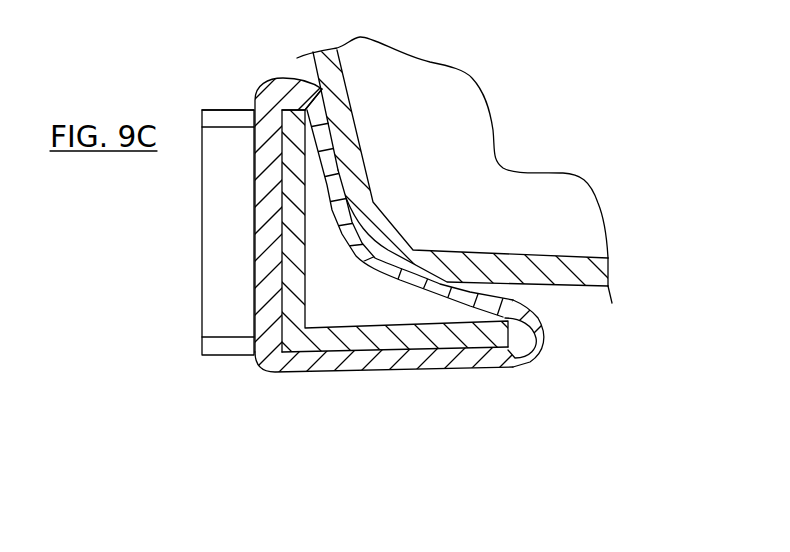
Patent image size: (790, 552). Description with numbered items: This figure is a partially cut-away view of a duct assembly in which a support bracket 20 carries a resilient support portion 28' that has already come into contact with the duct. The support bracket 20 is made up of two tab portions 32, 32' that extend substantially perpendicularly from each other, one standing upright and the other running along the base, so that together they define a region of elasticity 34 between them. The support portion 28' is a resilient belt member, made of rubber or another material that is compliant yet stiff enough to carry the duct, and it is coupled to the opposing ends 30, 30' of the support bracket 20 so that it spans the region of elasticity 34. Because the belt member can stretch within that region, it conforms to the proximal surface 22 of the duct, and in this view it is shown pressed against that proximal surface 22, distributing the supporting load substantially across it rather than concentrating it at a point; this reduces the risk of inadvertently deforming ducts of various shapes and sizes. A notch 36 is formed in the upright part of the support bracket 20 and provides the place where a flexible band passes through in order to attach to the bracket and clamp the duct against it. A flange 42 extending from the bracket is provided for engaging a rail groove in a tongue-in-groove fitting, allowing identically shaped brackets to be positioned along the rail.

The support bracket 20 is at (200, 106).
The proximal surface 22 is at (352, 252).
The support portion 28' is at (474, 249).
The opposing end 30 is at (554, 367).
The opposing end 30' is at (395, 276).
The tab portion 32 is at (395, 276).
The tab portion 32' is at (192, 232).
The region of elasticity 34 is at (340, 291).
The notch 36 is at (234, 126).
The flange 42 is at (391, 352).